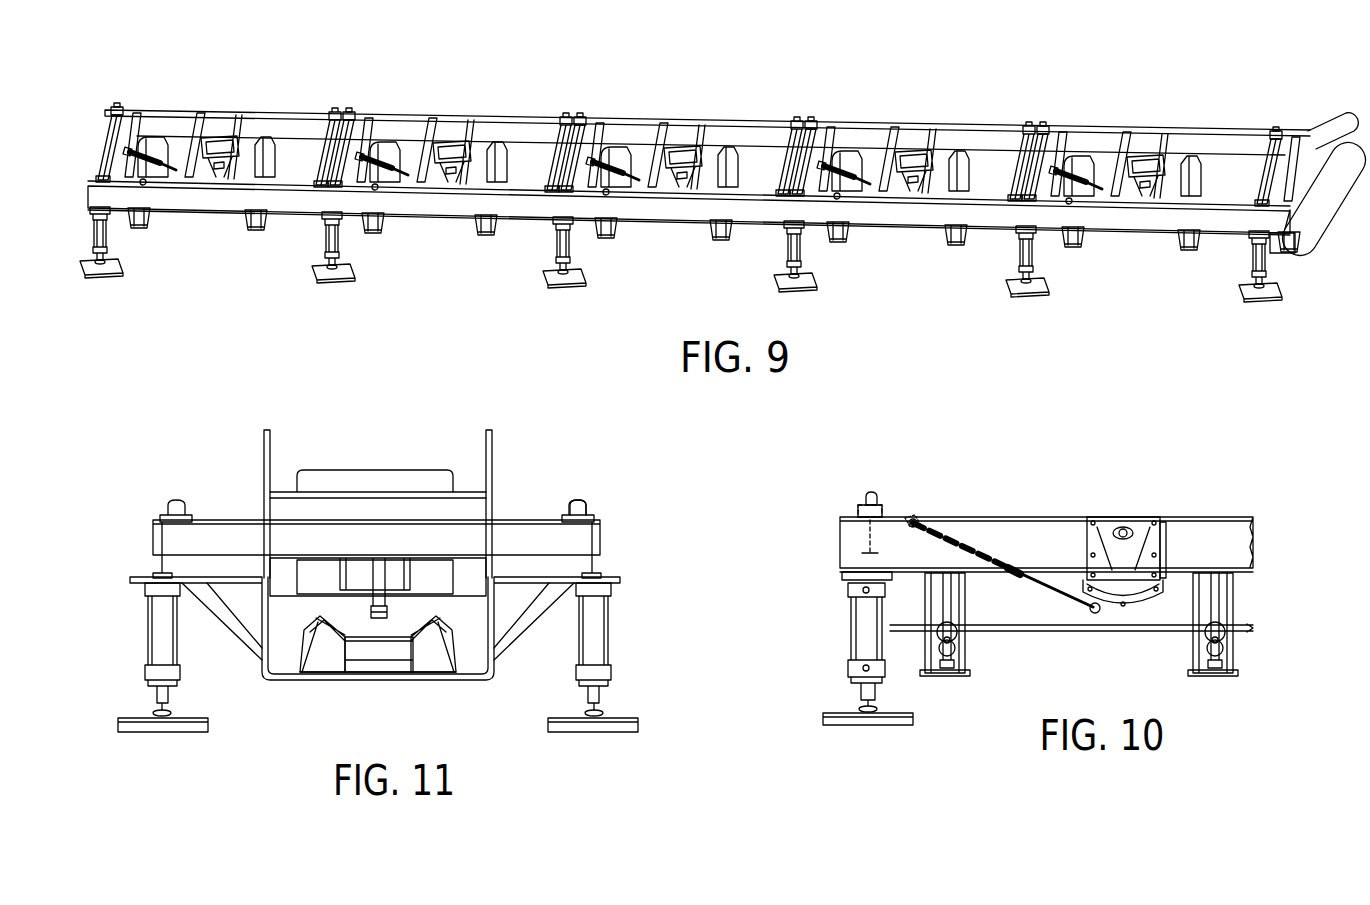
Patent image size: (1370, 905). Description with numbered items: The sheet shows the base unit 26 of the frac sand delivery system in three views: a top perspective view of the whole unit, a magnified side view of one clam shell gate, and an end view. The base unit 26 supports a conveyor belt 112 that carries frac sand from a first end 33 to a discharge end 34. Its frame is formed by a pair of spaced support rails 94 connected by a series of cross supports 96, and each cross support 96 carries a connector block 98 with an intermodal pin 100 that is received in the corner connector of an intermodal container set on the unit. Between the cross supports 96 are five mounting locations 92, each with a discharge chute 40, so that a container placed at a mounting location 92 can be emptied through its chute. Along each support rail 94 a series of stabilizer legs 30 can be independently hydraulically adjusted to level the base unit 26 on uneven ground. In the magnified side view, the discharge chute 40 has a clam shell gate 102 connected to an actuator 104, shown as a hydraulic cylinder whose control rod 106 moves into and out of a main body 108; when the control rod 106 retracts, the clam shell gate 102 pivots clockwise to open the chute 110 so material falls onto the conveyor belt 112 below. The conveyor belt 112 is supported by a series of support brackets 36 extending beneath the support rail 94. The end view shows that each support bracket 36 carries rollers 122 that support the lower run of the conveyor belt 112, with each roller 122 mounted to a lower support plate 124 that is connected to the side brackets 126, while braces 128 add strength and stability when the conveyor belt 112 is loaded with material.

In FIG. 9, the base unit 26 is at (886, 100).
In FIG. 9, the stabilizer legs 30 is at (786, 240).
In FIG. 11, the stabilizer legs 30 is at (614, 630).
In FIG. 10, the stabilizer legs 30 is at (848, 626).
In FIG. 9, the first end 33 is at (108, 120).
In FIG. 9, the discharge end 34 is at (1310, 128).
In FIG. 11, the support brackets 36 is at (315, 703).
In FIG. 10, the support brackets 36 is at (947, 678).
In FIG. 9, the discharge chute 40 is at (222, 145).
In FIG. 10, the discharge chute 40 is at (1142, 500).
In FIG. 9, the mounting locations 92 is at (283, 97).
In FIG. 9, the support rails 94 is at (984, 135).
In FIG. 10, the support rails 94 is at (955, 524).
In FIG. 9, the cross supports 96 is at (794, 131).
In FIG. 11, the cross supports 96 is at (536, 526).
In FIG. 9, the connector block 98 is at (813, 124).
In FIG. 11, the connector block 98 is at (596, 516).
In FIG. 10, the connector block 98 is at (884, 503).
In FIG. 9, the intermodal pin 100 is at (809, 117).
In FIG. 11, the intermodal pin 100 is at (579, 498).
In FIG. 10, the intermodal pin 100 is at (866, 492).
In FIG. 9, the clam shell gate 102 is at (914, 185).
In FIG. 10, the clam shell gate 102 is at (1148, 600).
In FIG. 9, the actuator 104 is at (135, 150).
In FIG. 10, the actuator 104 is at (1010, 565).
In FIG. 10, the control rod 106 is at (1046, 583).
In FIG. 10, the main body 108 is at (965, 538).
In FIG. 10, the chute 110 is at (1168, 535).
In FIG. 11, the conveyor belt 112 is at (330, 630).
In FIG. 10, the conveyor belt 112 is at (1075, 633).
In FIG. 11, the rollers 122 is at (393, 660).
In FIG. 11, the lower support plate 124 is at (470, 684).
In FIG. 11, the side brackets 126 is at (528, 620).
In FIG. 11, the braces 128 is at (230, 618).